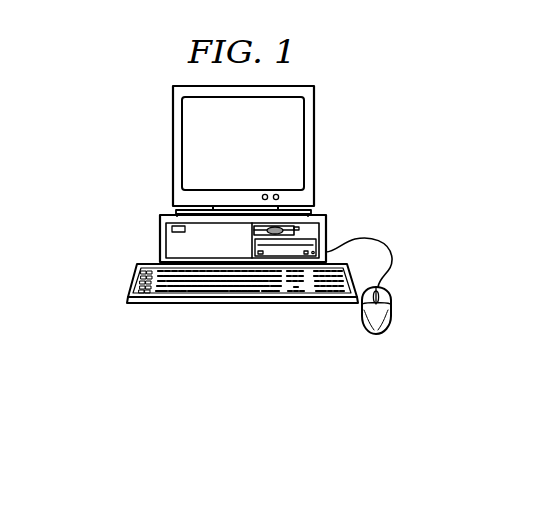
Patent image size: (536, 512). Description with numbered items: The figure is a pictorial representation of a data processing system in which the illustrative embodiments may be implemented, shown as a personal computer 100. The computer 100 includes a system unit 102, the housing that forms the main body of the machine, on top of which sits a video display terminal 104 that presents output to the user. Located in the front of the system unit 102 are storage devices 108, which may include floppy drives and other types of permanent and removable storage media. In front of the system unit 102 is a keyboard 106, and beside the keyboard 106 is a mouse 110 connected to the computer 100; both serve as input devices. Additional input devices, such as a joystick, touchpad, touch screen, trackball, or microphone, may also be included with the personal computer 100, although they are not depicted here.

The computer 100 is at (108, 133).
The system unit 102 is at (160, 237).
The video display terminal 104 is at (314, 146).
The keyboard 106 is at (157, 304).
The storage devices 108 is at (298, 229).
The mouse 110 is at (376, 334).